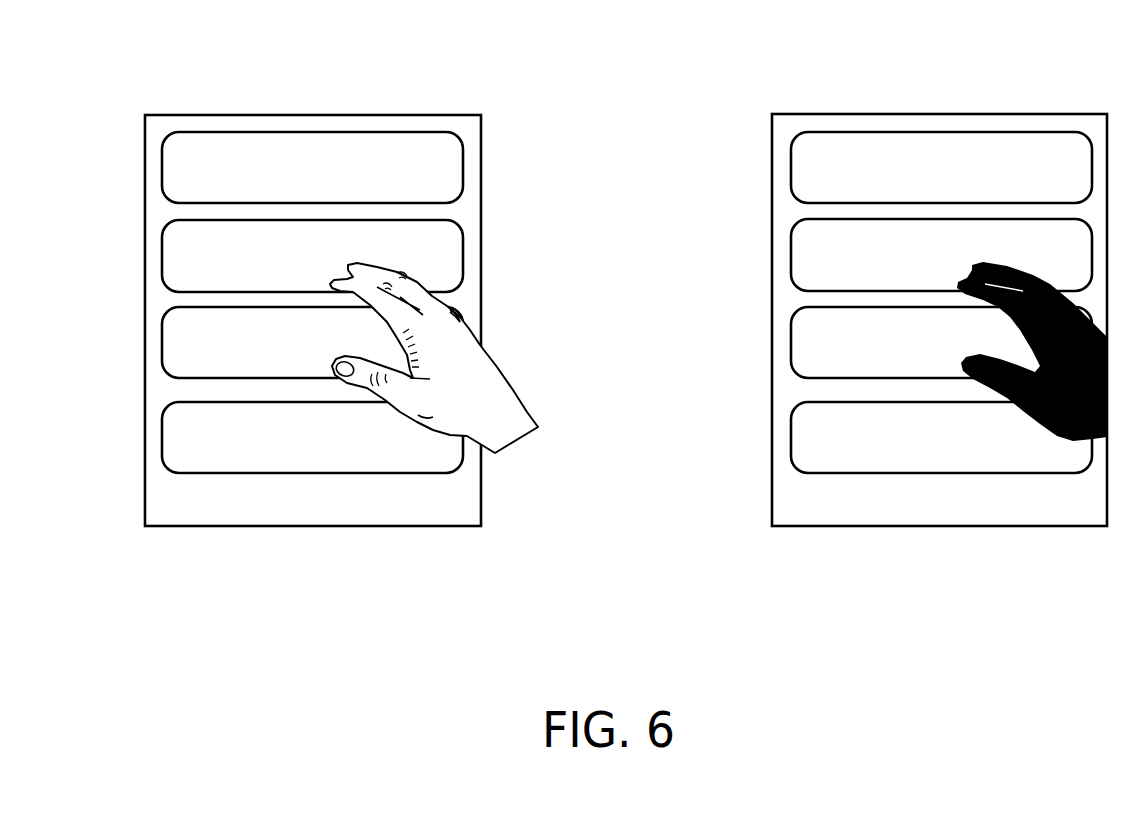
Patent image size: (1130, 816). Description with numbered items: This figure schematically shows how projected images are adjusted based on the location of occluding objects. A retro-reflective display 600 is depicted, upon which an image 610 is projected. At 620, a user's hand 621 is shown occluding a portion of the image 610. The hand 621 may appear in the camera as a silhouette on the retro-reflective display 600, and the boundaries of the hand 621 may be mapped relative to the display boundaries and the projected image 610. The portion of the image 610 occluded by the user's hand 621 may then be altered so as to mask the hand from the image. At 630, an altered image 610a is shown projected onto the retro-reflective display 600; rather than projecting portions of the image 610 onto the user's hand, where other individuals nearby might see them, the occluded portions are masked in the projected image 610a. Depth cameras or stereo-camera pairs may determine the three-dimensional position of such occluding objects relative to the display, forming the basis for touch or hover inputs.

The retro-reflective display 600 is at (145, 510).
The image 610 is at (465, 520).
The altered image 610a is at (1090, 520).
The first depicted state 620 is at (350, 279).
The user's hand 621 is at (515, 428).
The second depicted state 630 is at (949, 279).